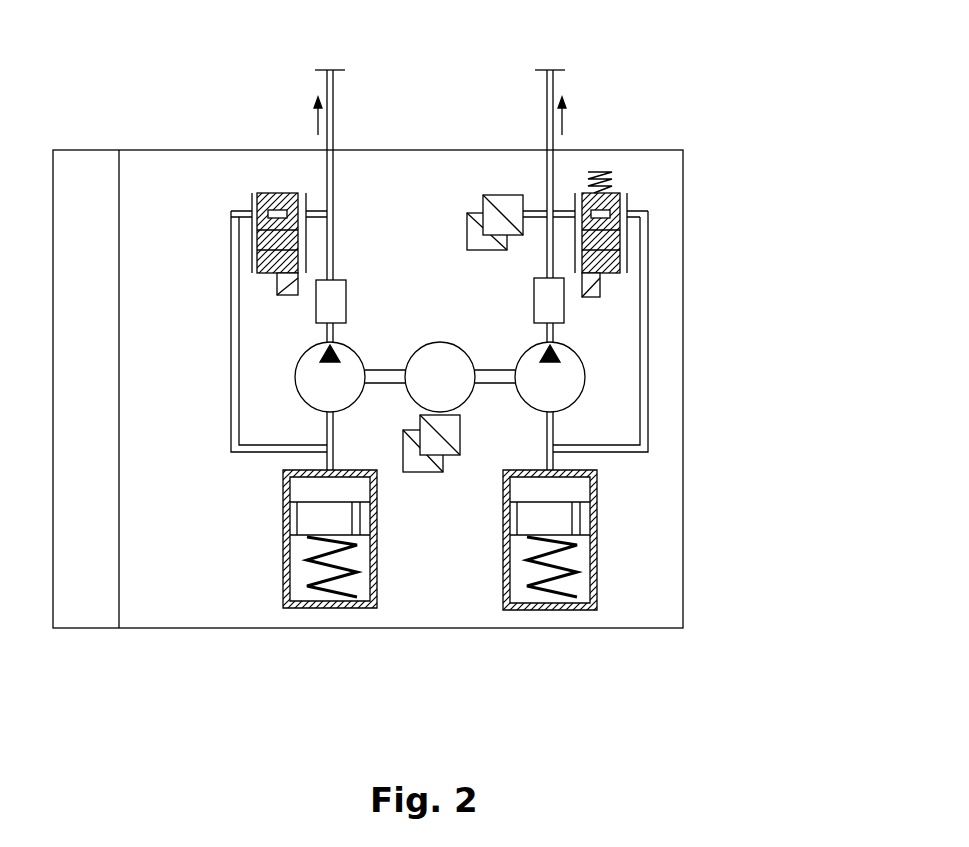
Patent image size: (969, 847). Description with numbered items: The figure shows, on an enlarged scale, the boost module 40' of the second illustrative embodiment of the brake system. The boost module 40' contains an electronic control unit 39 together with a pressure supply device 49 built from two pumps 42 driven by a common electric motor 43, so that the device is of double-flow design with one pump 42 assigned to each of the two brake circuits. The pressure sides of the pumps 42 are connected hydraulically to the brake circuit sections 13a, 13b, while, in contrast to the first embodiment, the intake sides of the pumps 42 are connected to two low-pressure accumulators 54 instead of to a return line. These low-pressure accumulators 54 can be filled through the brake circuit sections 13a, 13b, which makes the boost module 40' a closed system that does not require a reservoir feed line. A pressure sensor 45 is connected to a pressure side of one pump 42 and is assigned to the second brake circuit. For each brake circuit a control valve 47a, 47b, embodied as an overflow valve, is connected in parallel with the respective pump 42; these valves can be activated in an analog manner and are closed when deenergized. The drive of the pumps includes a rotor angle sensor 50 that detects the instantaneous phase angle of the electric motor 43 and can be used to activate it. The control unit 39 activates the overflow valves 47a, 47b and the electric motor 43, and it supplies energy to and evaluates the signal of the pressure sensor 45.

The brake circuit section 13a is at (334, 97).
The brake circuit section 13b is at (546, 97).
The electronic control unit 39 is at (88, 606).
The boost module 40' is at (428, 389).
The pump 42 is at (318, 384).
The electric motor 43 is at (451, 358).
The pressure sensor 45 is at (483, 205).
The control valve 47a is at (279, 284).
The control valve 47b is at (602, 284).
The pressure supply device 49 is at (398, 334).
The rotor angle sensor 50 is at (430, 476).
The low-pressure accumulator 54 is at (300, 487).